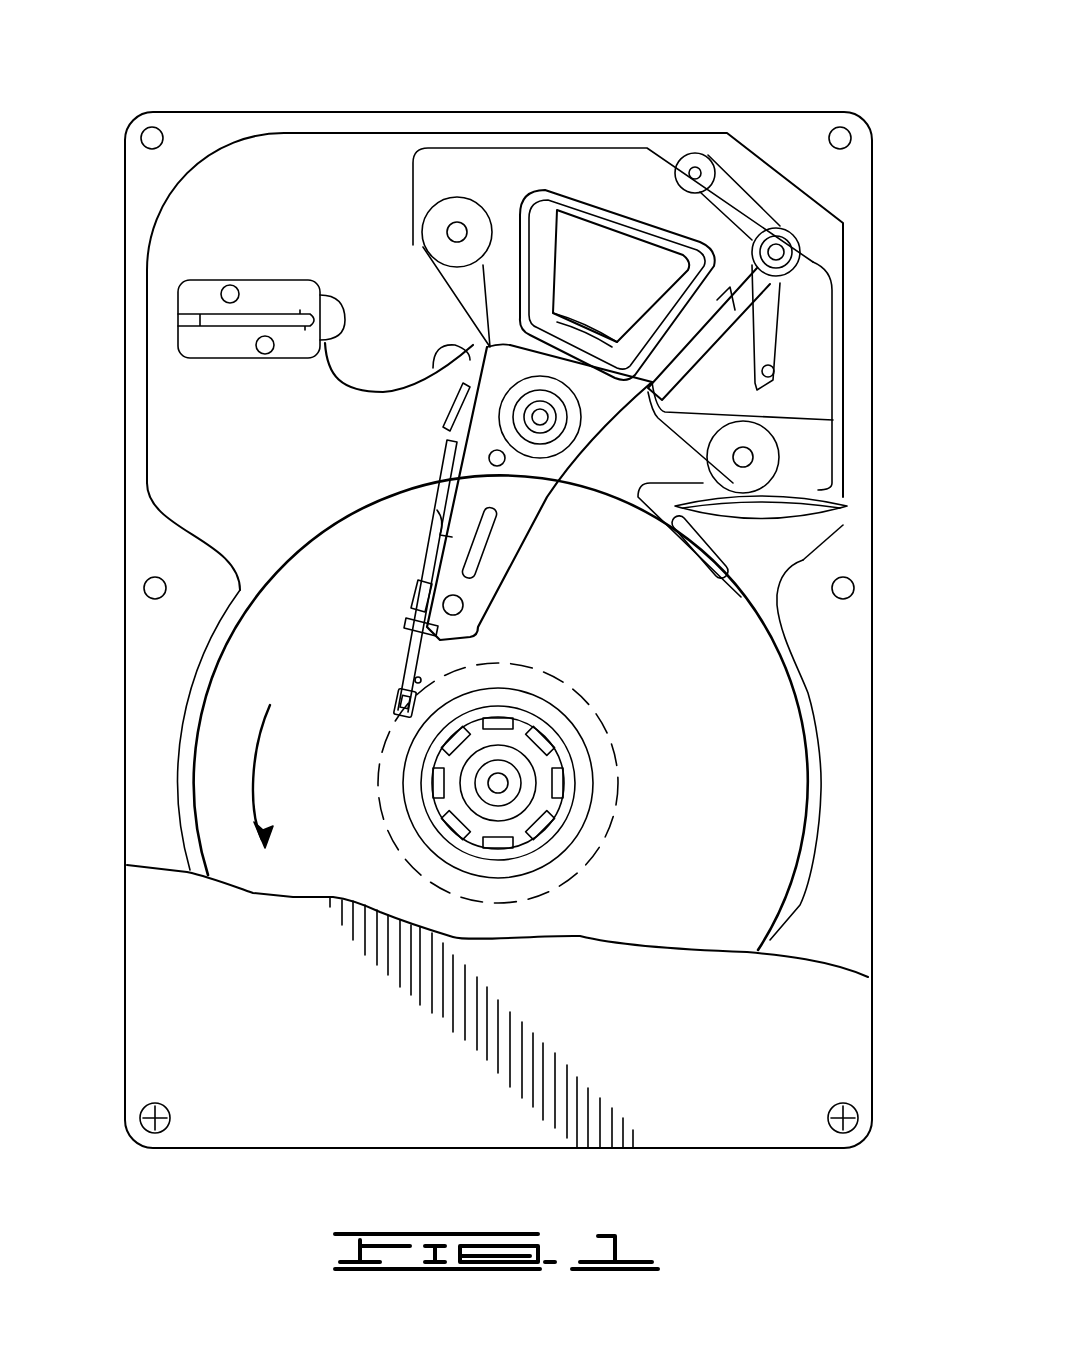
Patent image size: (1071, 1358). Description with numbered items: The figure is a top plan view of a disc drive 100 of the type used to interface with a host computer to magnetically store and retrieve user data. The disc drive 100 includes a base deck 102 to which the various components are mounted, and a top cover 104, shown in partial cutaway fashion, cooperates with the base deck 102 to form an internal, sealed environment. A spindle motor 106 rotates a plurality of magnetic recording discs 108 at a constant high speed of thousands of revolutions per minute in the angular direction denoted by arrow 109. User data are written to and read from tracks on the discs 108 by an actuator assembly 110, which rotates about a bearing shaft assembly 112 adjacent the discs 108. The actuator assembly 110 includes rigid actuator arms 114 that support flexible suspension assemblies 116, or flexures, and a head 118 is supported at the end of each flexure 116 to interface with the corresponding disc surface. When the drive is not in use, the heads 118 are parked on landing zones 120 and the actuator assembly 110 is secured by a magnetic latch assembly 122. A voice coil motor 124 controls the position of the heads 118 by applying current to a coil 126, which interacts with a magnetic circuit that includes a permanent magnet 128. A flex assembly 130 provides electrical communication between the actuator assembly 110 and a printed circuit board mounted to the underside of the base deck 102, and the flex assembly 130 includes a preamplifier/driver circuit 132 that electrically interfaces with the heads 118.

The disc drive 100 is at (234, 75).
The base deck 102 is at (180, 435).
The top cover 104 is at (180, 945).
The spindle motor 106 is at (540, 775).
The magnetic recording discs 108 is at (777, 800).
The arrow 109 is at (258, 770).
The actuator assembly 110 is at (539, 492).
The bearing shaft assembly 112 is at (550, 433).
The actuator arms 114 is at (500, 550).
The suspension assemblies 116 is at (430, 655).
The head 118 is at (398, 694).
The landing zones 120 is at (604, 840).
The magnetic latch assembly 122 is at (780, 312).
The voice coil motor 124 is at (628, 170).
The coil 126 is at (570, 190).
The permanent magnet 128 is at (722, 390).
The flex assembly 130 is at (375, 390).
The preamplifier/driver circuit 132 is at (455, 412).